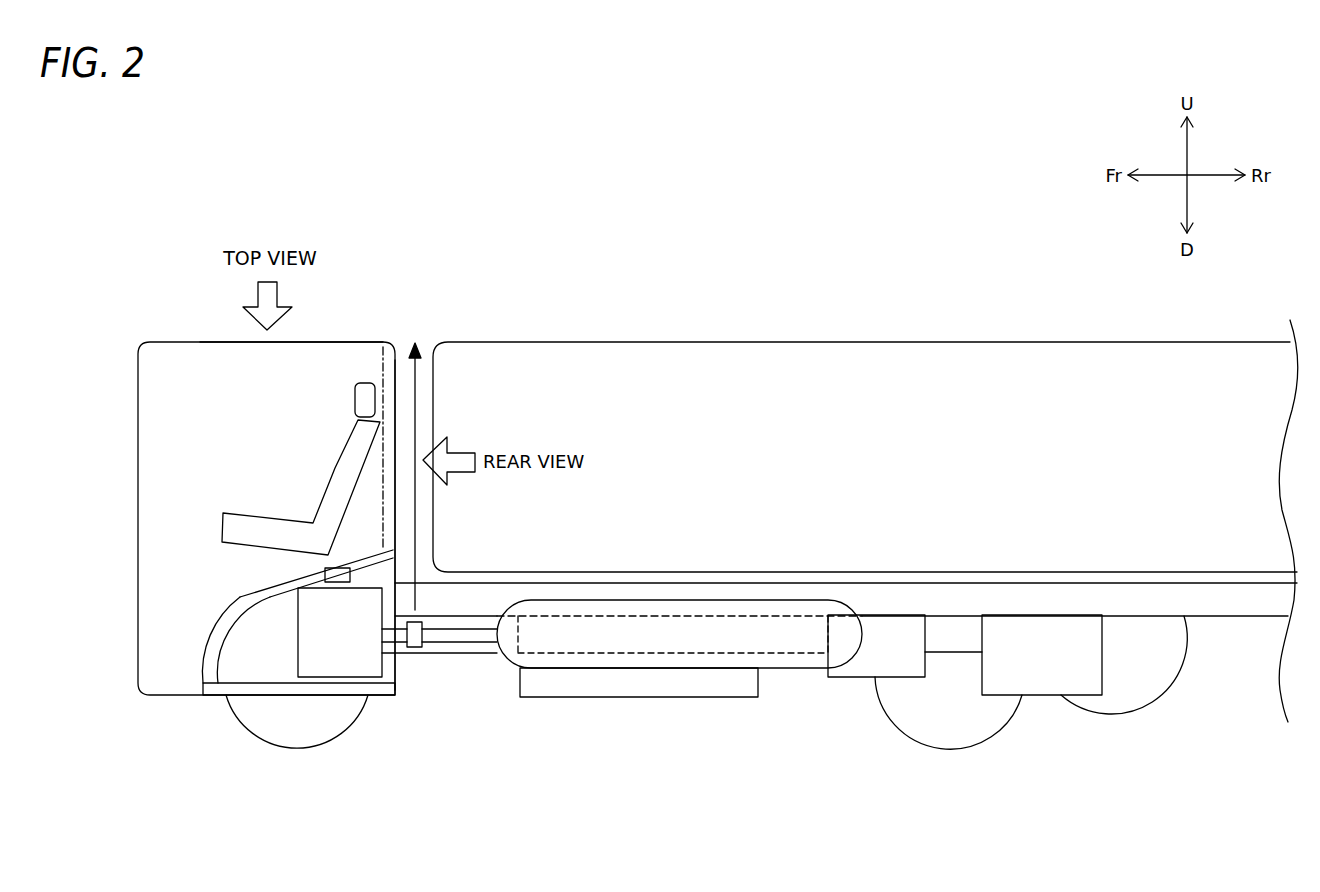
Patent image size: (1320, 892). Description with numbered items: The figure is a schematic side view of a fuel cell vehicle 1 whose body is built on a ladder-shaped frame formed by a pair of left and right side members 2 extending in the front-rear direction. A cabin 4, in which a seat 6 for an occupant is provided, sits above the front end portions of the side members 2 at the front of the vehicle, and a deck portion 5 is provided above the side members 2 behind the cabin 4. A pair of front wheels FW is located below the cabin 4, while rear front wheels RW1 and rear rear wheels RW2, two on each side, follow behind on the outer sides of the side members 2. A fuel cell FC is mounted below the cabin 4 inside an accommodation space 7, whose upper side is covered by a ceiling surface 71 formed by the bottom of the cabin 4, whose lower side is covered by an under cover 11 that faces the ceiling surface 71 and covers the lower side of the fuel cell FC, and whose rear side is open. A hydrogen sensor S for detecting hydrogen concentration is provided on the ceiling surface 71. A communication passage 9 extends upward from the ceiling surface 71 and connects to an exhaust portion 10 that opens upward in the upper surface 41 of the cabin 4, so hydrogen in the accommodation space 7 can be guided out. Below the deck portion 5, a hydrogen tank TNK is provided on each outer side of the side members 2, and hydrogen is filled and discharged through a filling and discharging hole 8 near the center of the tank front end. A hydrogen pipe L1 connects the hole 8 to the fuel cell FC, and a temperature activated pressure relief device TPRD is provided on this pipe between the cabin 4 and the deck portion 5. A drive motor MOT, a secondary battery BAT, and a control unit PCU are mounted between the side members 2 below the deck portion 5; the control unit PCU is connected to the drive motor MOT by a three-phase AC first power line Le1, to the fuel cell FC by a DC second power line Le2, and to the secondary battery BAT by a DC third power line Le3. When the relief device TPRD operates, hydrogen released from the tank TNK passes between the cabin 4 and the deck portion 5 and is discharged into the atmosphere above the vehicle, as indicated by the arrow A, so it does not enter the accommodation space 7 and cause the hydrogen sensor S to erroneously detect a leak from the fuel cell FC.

The fuel cell vehicle 1 is at (796, 185).
The side member 2 is at (1242, 602).
The cabin 4 is at (180, 360).
The deck portion 5 is at (883, 362).
The seat 6 is at (280, 535).
The accommodation space 7 is at (222, 632).
The ceiling surface 71 is at (258, 595).
The filling and discharging hole 8 is at (484, 640).
The communication passage 9 is at (397, 373).
The exhaust portion 10 is at (384, 345).
The under cover 11 is at (258, 690).
The upper surface 41 is at (340, 342).
The arrow A is at (416, 397).
The hydrogen sensor S is at (337, 565).
The fuel cell FC is at (340, 632).
The hydrogen tank TNK is at (679, 634).
The secondary battery BAT is at (645, 684).
The control unit PCU is at (868, 652).
The drive motor MOT is at (1042, 655).
The front wheel FW is at (295, 722).
The rear front wheel RW1 is at (990, 713).
The rear rear wheel RW2 is at (1158, 712).
The temperature activated pressure relief device TPRD is at (415, 650).
The hydrogen pipe L1 is at (458, 637).
The first power line Le1 is at (953, 653).
The second power line Le2 is at (487, 640).
The third power line Le3 is at (795, 660).